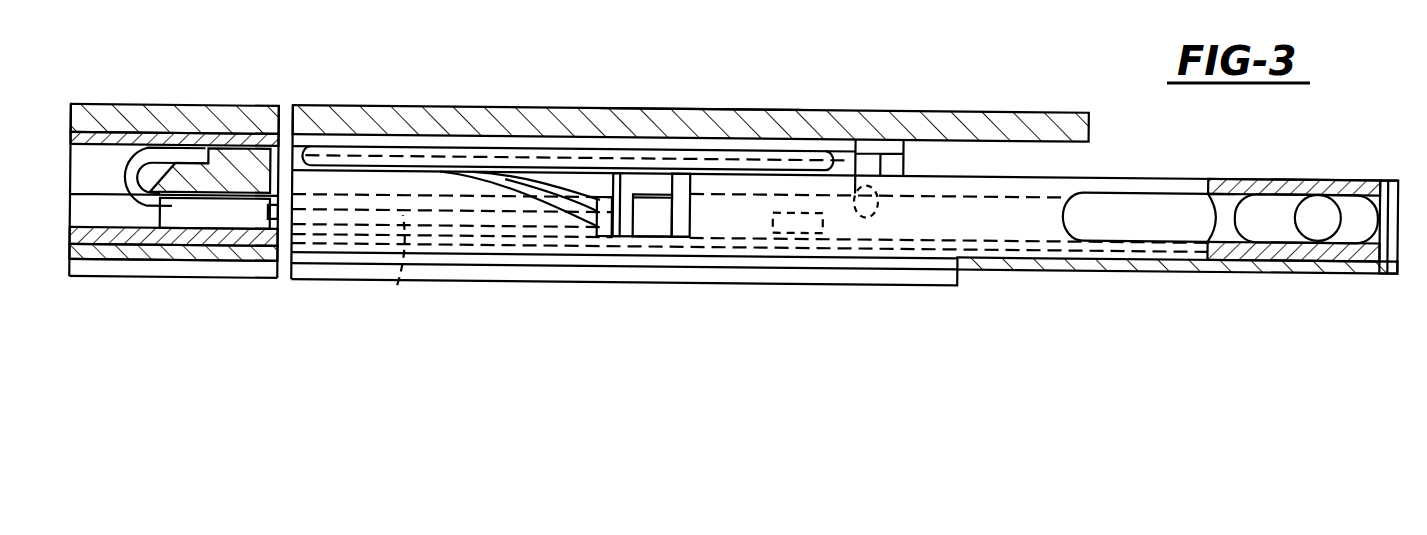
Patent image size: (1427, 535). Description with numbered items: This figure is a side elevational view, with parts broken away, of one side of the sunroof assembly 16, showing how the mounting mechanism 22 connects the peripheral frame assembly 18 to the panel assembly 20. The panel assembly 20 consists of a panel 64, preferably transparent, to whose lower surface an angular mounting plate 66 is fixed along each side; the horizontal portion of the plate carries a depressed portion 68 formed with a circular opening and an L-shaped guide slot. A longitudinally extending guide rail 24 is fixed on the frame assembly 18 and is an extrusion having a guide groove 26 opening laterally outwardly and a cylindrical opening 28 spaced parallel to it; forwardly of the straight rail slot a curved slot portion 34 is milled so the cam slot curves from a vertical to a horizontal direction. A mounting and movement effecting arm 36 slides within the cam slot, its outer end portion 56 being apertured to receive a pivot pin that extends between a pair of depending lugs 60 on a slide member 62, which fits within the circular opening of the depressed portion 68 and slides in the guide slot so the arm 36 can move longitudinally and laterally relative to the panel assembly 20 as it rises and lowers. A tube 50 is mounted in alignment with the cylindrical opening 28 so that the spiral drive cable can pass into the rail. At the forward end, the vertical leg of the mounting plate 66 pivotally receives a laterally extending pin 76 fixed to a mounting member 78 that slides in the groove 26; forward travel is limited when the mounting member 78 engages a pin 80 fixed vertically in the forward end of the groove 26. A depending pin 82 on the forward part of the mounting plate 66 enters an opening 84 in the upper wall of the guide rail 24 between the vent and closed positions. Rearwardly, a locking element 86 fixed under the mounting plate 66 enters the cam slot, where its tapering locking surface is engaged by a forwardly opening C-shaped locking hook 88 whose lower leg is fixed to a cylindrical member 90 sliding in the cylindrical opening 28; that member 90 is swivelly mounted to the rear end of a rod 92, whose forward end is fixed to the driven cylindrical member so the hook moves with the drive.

The sunroof assembly 16 is at (978, 104).
The peripheral frame assembly 18 is at (137, 272).
The panel assembly 20 is at (696, 104).
The mounting mechanism 22 is at (1135, 170).
The guide rail 24 is at (1194, 186).
The guide groove 26 is at (1273, 236).
The cylindrical opening 28 is at (248, 224).
The curved slot portion 34 is at (532, 183).
The mounting and movement effecting arm 36 is at (655, 244).
The tube 50 is at (1152, 239).
The outer end portion 56 is at (660, 224).
The lug 60 is at (623, 204).
The slide member 62 is at (700, 190).
The panel 64 is at (224, 112).
The angular mounting plate 66 is at (345, 141).
The depressed portion 68 is at (423, 151).
The pin 76 is at (1318, 212).
The mounting member 78 is at (1348, 236).
The pin 80 is at (1404, 218).
The pin 82 is at (870, 166).
The opening 84 is at (880, 206).
The locking element 86 is at (250, 152).
The C-shaped locking hook 88 is at (141, 154).
The cylindrical member 90 is at (172, 213).
The rod 92 is at (290, 214).